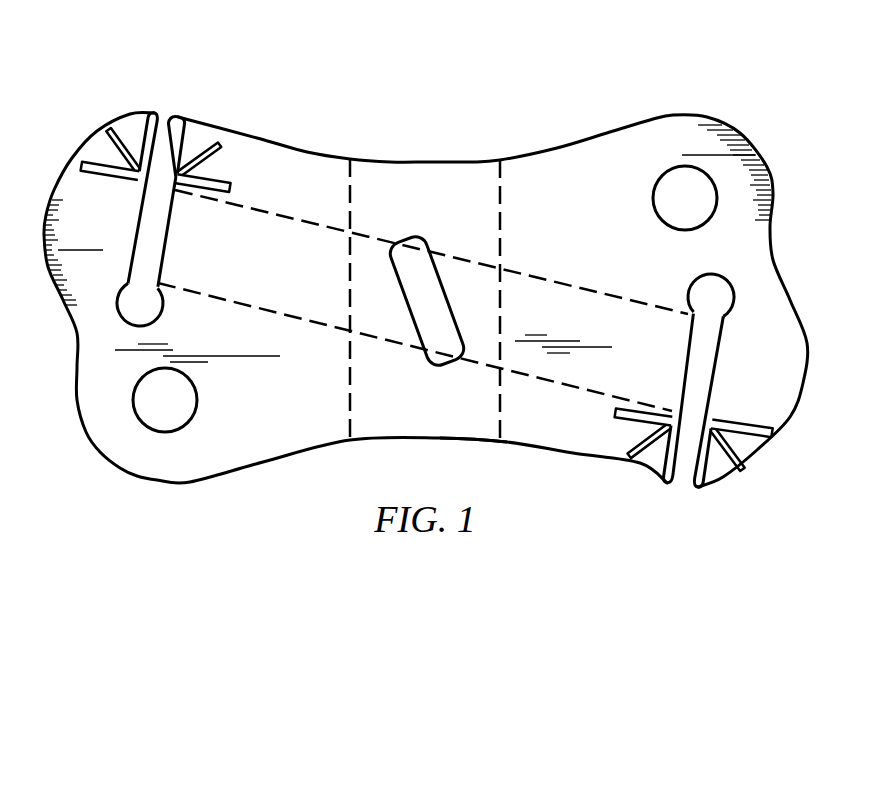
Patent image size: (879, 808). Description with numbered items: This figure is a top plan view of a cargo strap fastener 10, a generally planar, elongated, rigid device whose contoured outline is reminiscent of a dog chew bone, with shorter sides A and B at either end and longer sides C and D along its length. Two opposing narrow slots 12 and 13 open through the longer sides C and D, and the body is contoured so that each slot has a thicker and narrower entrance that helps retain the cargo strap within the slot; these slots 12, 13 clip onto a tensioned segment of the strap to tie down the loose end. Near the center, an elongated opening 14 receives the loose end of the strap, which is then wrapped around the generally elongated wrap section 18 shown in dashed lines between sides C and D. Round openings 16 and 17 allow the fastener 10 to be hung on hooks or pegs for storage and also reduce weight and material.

The cargo strap fastener 10 is at (688, 57).
The narrow slot 12 is at (165, 120).
The narrow slot 13 is at (680, 483).
The elongated opening 14 is at (405, 263).
The opening 16 is at (173, 405).
The opening 17 is at (673, 208).
The elongated wrap section 18 is at (480, 441).